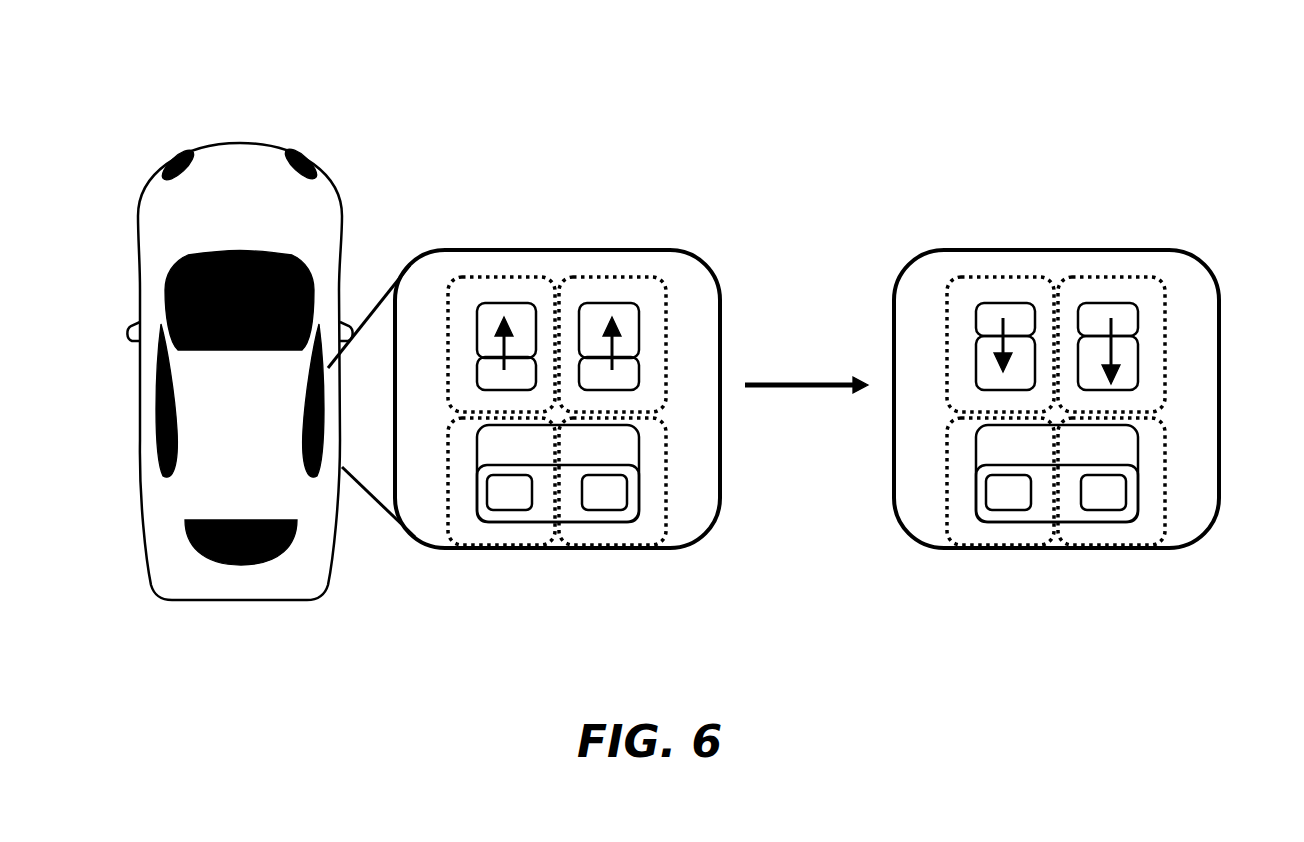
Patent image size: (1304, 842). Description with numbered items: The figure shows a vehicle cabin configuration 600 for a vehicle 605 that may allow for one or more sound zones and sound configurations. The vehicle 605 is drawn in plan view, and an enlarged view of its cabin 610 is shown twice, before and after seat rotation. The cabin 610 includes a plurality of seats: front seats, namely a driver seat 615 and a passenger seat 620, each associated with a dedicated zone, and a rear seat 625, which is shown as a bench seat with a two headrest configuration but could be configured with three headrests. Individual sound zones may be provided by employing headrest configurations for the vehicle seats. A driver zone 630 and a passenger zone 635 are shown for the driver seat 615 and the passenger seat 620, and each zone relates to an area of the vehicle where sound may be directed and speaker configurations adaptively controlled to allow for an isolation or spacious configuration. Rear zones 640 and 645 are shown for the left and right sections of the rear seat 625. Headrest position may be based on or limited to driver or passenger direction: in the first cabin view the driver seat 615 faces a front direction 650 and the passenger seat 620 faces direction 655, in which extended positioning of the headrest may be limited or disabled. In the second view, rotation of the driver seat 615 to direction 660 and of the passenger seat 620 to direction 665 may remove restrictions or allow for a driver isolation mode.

The vehicle cabin configuration 600 is at (169, 109).
The vehicle 605 is at (152, 237).
The cabin 610 is at (692, 262).
The driver seat 615 is at (505, 303).
The passenger seat 620 is at (627, 317).
The rear seat 625 is at (543, 508).
The driver zone 630 is at (448, 290).
The passenger zone 635 is at (652, 357).
The rear zone 640 is at (463, 492).
The rear zone 645 is at (653, 507).
The direction 650 is at (504, 318).
The direction 655 is at (612, 318).
The direction 660 is at (1003, 318).
The direction 665 is at (1111, 325).